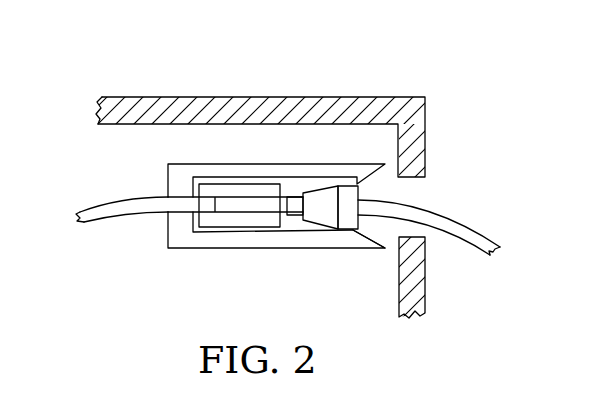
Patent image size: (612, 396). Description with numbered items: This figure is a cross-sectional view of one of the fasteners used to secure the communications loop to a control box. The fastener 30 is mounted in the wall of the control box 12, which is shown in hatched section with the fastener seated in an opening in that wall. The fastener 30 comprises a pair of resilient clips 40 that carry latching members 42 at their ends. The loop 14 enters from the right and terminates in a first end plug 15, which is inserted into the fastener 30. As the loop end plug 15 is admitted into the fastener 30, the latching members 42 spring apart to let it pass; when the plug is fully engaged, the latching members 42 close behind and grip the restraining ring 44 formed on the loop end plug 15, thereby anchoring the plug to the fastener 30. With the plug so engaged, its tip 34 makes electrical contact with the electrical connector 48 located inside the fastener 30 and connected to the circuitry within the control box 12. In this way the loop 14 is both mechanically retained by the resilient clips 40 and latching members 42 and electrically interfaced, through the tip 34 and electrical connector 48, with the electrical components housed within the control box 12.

The control box 12 is at (245, 97).
The loop 14 is at (428, 200).
The first end plug 15 is at (346, 194).
The fastener 30 is at (280, 258).
The tip 34 is at (250, 214).
The resilient clips 40 is at (228, 165).
The latching members 42 is at (378, 250).
The restraining ring 44 is at (322, 228).
The electrical connector 48 is at (222, 228).